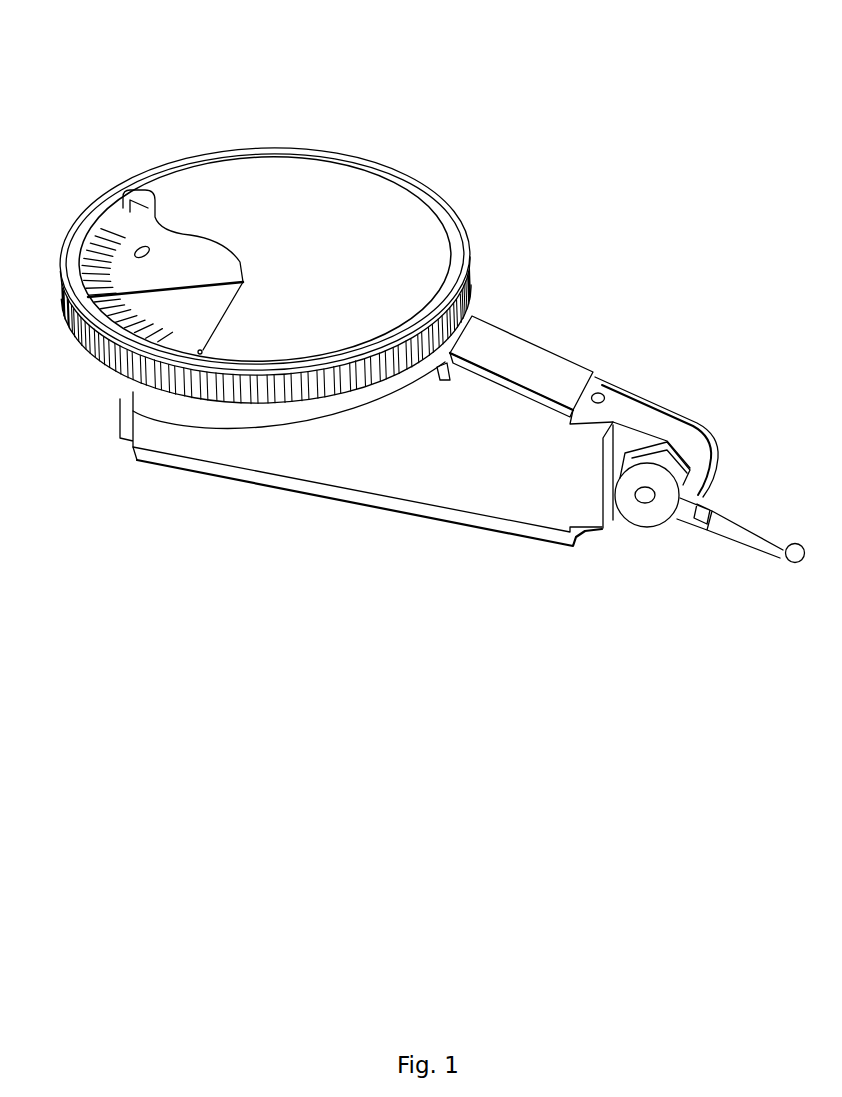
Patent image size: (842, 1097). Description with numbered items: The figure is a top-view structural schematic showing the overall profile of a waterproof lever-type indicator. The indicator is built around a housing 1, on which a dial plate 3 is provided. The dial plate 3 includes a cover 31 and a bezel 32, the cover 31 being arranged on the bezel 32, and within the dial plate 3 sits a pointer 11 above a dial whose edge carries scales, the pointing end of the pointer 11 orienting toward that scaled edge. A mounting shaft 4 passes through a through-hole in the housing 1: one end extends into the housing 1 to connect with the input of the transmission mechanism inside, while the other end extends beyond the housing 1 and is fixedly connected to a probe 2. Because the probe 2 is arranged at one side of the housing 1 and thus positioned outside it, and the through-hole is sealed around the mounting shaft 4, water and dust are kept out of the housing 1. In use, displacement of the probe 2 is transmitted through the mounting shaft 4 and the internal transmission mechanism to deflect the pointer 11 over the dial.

The housing 1 is at (432, 482).
The probe 2 is at (745, 527).
The dial plate 3 is at (150, 273).
The mounting shaft 4 is at (646, 500).
The pointer 11 is at (220, 282).
The cover 31 is at (303, 255).
The bezel 32 is at (186, 384).